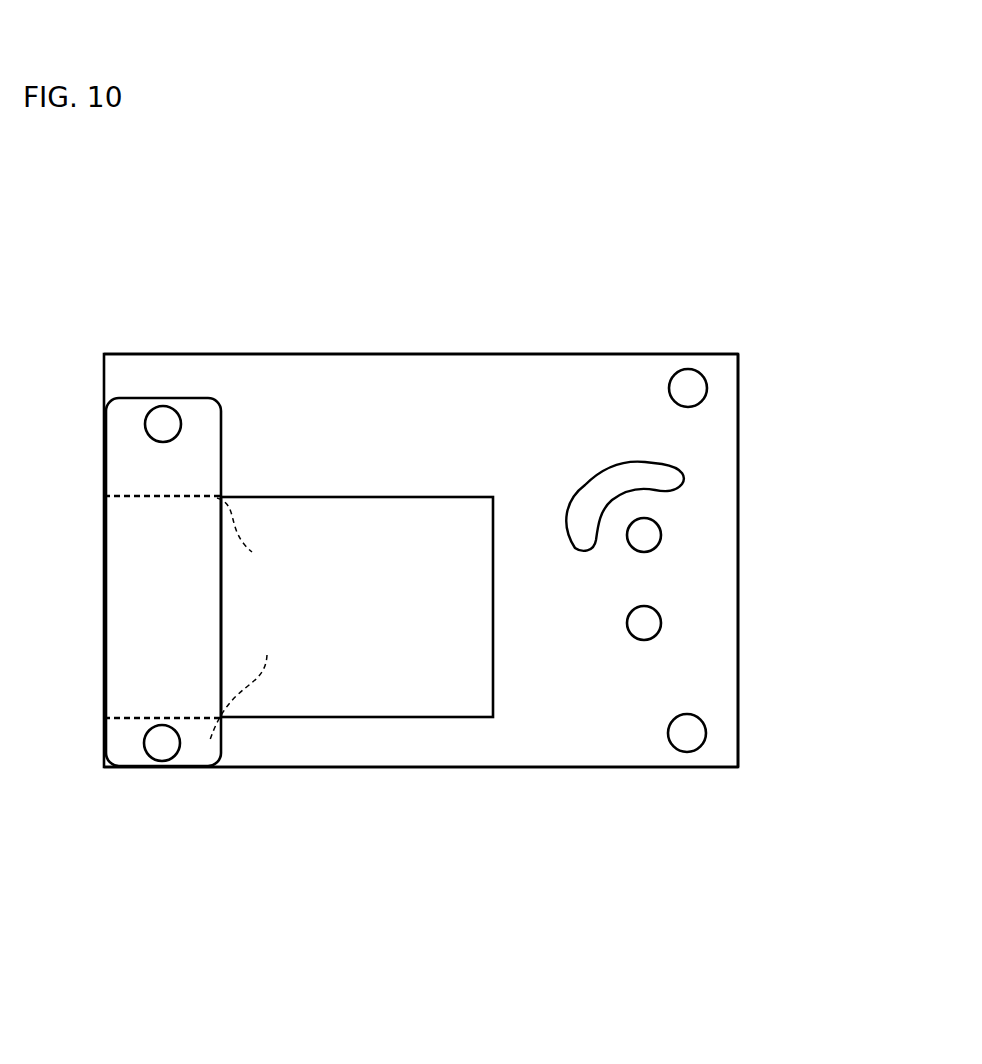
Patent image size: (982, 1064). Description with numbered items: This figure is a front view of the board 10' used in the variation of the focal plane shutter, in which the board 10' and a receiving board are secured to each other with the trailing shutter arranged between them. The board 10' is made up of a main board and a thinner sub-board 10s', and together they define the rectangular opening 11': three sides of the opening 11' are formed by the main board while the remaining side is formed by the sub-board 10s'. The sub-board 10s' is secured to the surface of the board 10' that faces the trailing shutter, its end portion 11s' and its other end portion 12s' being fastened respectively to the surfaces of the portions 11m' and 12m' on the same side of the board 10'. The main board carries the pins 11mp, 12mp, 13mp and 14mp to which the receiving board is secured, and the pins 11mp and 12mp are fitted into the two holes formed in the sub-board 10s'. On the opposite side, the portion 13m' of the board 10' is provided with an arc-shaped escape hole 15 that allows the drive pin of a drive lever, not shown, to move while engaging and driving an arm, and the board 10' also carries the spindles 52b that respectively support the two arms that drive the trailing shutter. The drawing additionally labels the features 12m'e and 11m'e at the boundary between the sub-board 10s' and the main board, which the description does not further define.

The board 10' is at (421, 627).
The sub-board 10s' is at (132, 582).
The other end portion of the sub-board 12s' is at (132, 473).
The end portion of the sub-board 11s' is at (185, 809).
The pin 12mp is at (165, 427).
The pin 11mp is at (162, 743).
The pin 14mp is at (686, 390).
The pin 13mp is at (687, 733).
The spindles 52b is at (644, 535).
The arc-shaped escape hole 15 is at (680, 478).
The opening 11' is at (357, 607).
The portion of the board 12m' is at (421, 460).
The portion of the board 11m' is at (421, 823).
The portion of the board 13m' is at (805, 560).
The upper edge 12m'e is at (276, 537).
The lower edge 11m'e is at (264, 683).